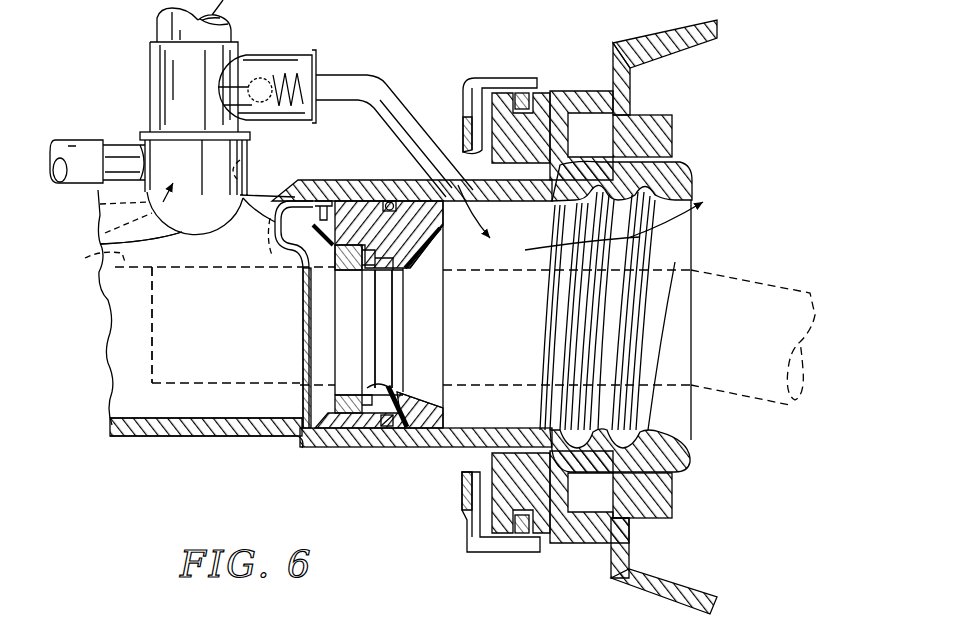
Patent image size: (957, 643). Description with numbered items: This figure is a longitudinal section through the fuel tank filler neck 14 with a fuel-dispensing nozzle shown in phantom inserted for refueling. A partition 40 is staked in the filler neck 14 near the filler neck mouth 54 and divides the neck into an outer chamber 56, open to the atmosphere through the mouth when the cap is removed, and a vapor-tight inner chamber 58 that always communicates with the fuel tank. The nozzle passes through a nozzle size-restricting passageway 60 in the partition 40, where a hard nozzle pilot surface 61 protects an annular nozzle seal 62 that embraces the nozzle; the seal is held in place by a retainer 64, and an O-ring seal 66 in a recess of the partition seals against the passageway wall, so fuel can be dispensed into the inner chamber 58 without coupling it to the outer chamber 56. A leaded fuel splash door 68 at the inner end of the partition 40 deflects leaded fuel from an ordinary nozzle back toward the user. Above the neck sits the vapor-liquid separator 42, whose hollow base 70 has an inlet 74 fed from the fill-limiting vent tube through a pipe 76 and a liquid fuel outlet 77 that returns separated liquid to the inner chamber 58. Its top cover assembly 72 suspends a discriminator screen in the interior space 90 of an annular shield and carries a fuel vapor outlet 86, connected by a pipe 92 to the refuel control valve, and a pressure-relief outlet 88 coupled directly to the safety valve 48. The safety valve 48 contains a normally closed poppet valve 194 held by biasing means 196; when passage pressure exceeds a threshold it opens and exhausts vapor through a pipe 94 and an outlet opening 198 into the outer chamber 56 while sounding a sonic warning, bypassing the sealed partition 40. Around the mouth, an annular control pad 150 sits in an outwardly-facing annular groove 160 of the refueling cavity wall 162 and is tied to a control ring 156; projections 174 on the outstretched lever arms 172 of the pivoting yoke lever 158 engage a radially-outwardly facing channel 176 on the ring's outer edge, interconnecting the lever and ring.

The filler neck 14 is at (116, 420).
The partition 40 is at (424, 414).
The vapor-liquid separator 42 is at (270, 119).
The safety valve 48 is at (304, 48).
The filler neck mouth 54 is at (665, 445).
The outer chamber 56 is at (486, 418).
The inner chamber 58 is at (174, 400).
The nozzle size-restricting passageway 60 is at (426, 388).
The hard nozzle pilot surface 61 is at (435, 245).
The annular nozzle seal 62 is at (378, 278).
The retainer 64 is at (346, 412).
The O-ring seal 66 is at (388, 200).
The leaded fuel splash door 68 is at (95, 258).
The base 70 is at (218, 188).
The top cover assembly 72 is at (145, 92).
The inlet 74 is at (120, 158).
The pipe 76 is at (72, 167).
The liquid fuel outlet 77 is at (247, 167).
The fuel vapor outlet 86 is at (173, 58).
The pressure-relief outlet 88 is at (314, 64).
The interior space 90 is at (99, 239).
The pipe 92 is at (229, 29).
The pipe 94 is at (375, 83).
The annular control pad 150 is at (662, 122).
The control ring 156 is at (552, 100).
The pivoting yoke lever 158 is at (474, 302).
The annular groove 160 is at (640, 117).
The refueling cavity wall 162 is at (680, 45).
The lever arms 172 is at (458, 108).
The projections 174 is at (522, 94).
The channel 176 is at (515, 108).
The poppet valve 194 is at (264, 108).
The biasing means 196 is at (317, 117).
The outlet opening 198 is at (468, 205).